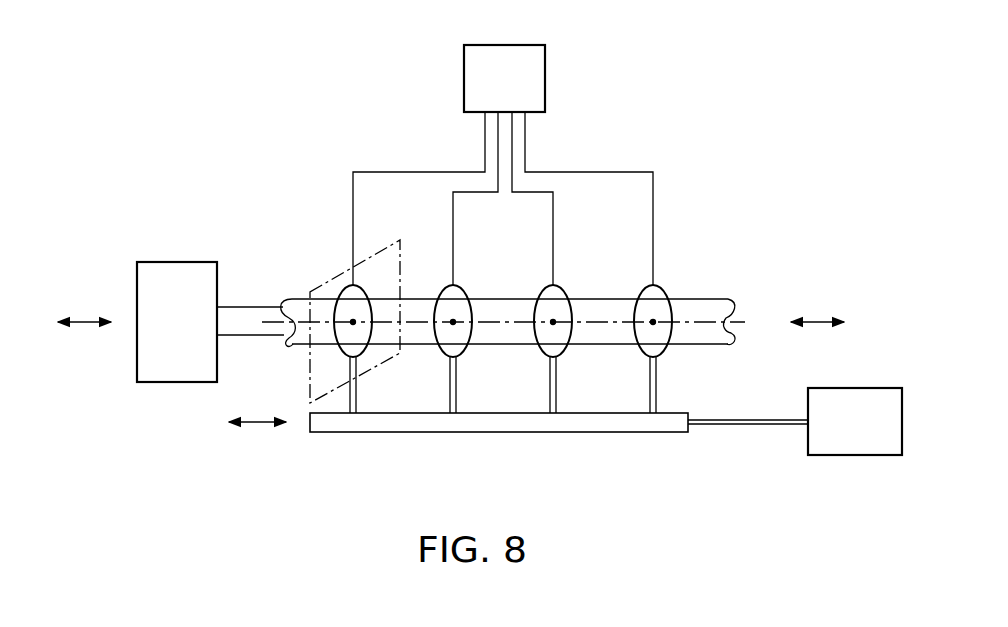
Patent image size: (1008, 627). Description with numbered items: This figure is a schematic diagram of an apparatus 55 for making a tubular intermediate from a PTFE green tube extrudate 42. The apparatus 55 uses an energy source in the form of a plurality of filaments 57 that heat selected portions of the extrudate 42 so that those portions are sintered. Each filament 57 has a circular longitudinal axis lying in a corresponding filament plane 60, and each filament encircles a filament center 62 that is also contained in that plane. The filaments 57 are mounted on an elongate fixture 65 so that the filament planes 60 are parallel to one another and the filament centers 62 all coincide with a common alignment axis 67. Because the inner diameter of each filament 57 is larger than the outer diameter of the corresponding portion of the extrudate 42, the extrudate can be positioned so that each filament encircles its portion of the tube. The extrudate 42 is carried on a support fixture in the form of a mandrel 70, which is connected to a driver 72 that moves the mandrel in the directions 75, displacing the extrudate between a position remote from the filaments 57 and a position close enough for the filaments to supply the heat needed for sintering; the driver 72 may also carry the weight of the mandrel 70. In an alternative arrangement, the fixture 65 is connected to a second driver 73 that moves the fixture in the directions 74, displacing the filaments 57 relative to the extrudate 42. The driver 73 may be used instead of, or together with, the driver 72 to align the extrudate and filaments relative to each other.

The extrudate 42 is at (706, 345).
The apparatus 55 is at (320, 140).
The filaments 57 is at (464, 291).
The filament plane 60 is at (338, 274).
The filament center 62 is at (353, 322).
The elongate fixture 65 is at (490, 433).
The alignment axis 67 is at (492, 323).
The mandrel 70 is at (253, 306).
The driver 72 is at (193, 335).
The driver 73 is at (871, 435).
The directions of fixture movement 74 is at (248, 424).
The directions of extrudate displacement 75 is at (82, 321).